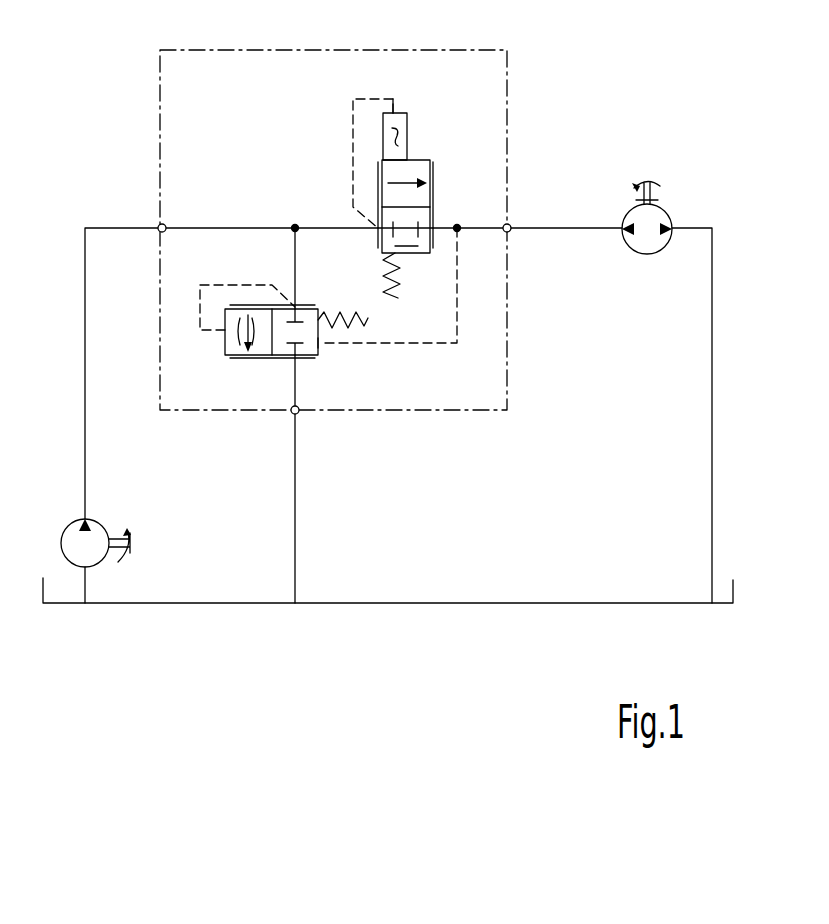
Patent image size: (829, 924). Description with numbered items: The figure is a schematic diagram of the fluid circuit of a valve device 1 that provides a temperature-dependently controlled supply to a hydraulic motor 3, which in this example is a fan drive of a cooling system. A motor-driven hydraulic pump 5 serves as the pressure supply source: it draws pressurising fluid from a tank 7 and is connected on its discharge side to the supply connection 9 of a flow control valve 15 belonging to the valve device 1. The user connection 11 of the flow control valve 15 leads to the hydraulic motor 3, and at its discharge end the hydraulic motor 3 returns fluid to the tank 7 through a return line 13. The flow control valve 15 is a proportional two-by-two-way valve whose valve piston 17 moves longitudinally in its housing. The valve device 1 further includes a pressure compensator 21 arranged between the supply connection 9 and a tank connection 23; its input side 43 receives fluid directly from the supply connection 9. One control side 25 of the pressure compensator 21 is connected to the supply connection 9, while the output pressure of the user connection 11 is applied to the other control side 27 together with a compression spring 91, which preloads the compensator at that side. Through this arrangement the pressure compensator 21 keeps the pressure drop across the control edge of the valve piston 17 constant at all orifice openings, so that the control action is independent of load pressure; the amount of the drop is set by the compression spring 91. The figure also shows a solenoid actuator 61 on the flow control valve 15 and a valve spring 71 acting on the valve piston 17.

The valve device 1 is at (507, 78).
The hydraulic motor 3 is at (664, 212).
The hydraulic pump 5 is at (66, 522).
The tank 7 is at (50, 600).
The supply connection 9 is at (159, 224).
The user connection 11 is at (510, 225).
The return line 13 is at (713, 352).
The flow control valve 15 is at (432, 183).
The valve piston 17 is at (413, 252).
The pressure compensator 21 is at (250, 400).
The tank connection 23 is at (299, 413).
The control side 25 is at (223, 333).
The control side 27 is at (322, 343).
The input side 43 is at (295, 305).
The solenoid actuator 61 is at (407, 125).
The valve spring 71 is at (390, 290).
The compression spring 91 is at (370, 318).